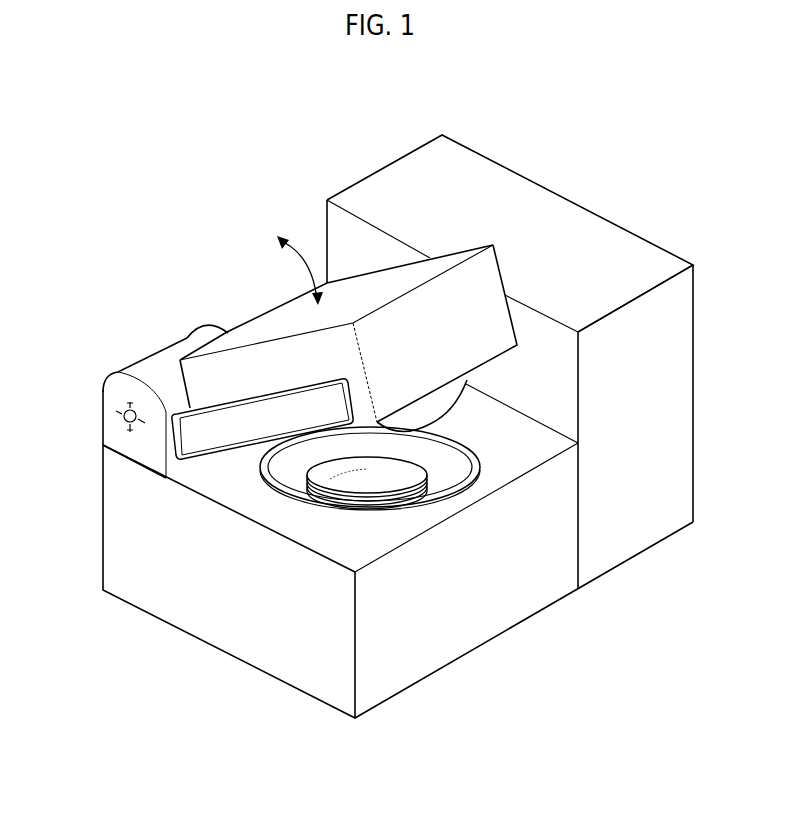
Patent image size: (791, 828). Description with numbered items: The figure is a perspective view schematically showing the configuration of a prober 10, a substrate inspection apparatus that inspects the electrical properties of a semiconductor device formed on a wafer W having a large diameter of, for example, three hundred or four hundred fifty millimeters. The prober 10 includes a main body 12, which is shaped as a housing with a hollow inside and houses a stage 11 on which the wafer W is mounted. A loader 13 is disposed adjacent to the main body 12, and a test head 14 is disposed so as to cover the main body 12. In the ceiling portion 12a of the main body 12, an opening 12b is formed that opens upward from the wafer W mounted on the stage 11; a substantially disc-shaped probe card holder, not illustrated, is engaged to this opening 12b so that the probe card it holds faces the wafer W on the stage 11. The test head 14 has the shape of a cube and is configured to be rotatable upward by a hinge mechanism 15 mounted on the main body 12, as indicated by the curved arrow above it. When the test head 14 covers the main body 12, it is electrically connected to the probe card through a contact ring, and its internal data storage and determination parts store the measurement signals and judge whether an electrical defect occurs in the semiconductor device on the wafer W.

The prober 10 is at (333, 92).
The stage 11 is at (440, 485).
The main body 12 is at (112, 528).
The ceiling portion 12a is at (365, 545).
The opening 12b is at (467, 475).
The loader 13 is at (548, 208).
The test head 14 is at (268, 318).
The hinge mechanism 15 is at (155, 358).
The wafer W is at (320, 485).